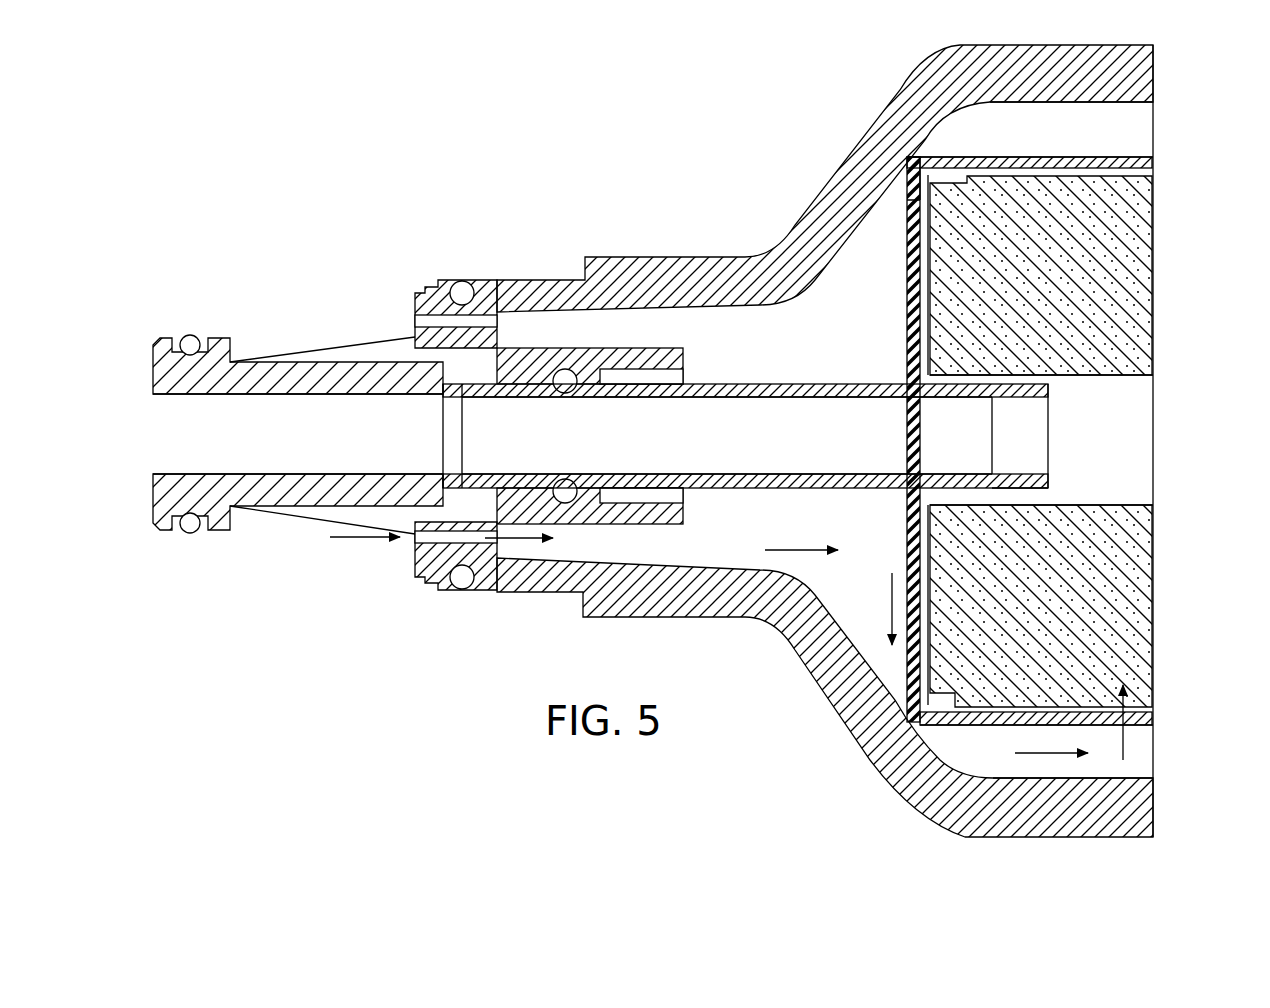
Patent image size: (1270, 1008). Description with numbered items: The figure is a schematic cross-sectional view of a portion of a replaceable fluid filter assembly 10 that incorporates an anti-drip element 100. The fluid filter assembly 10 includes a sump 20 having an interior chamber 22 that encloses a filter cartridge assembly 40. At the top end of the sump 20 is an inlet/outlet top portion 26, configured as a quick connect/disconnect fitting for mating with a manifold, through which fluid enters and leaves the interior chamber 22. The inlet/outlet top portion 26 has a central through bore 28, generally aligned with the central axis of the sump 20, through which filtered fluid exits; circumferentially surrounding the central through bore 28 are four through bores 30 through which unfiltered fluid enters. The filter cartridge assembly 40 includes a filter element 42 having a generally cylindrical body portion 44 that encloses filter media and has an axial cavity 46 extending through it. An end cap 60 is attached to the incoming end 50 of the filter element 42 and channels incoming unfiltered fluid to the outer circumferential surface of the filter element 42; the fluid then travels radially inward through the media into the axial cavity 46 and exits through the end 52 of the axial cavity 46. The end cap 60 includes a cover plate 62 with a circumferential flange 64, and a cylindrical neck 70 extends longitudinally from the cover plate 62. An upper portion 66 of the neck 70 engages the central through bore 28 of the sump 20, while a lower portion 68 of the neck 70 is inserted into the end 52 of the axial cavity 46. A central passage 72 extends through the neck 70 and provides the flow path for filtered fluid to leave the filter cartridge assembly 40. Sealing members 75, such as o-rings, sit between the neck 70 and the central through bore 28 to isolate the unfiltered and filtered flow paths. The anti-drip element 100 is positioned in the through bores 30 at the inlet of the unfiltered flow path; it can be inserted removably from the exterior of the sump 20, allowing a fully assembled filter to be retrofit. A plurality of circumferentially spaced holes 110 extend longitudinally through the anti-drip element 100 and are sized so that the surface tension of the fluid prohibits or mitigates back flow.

The fluid filter assembly 10 is at (505, 170).
The sump 20 is at (837, 153).
The interior chamber 22 is at (1135, 132).
The inlet/outlet top portion 26 is at (298, 505).
The central through bore 28 is at (192, 473).
The through bores 30 is at (410, 336).
The filter cartridge assembly 40 is at (1053, 144).
The filter element 42 is at (1113, 250).
The body portion 44 is at (1133, 153).
The axial cavity 46 is at (1123, 445).
The incoming end 50 is at (953, 650).
The end of axial cavity 52 is at (1073, 400).
The end cap 60 is at (843, 361).
The cover plate 62 is at (907, 265).
The circumferential flange 64 is at (947, 150).
The upper portion of neck 66 is at (498, 378).
The lower portion of neck 68 is at (1047, 502).
The cylindrical neck 70 is at (717, 508).
The central passage 72 is at (785, 455).
The sealing members 75 is at (567, 377).
The anti-drip element 100 is at (391, 299).
The holes 110 is at (436, 290).